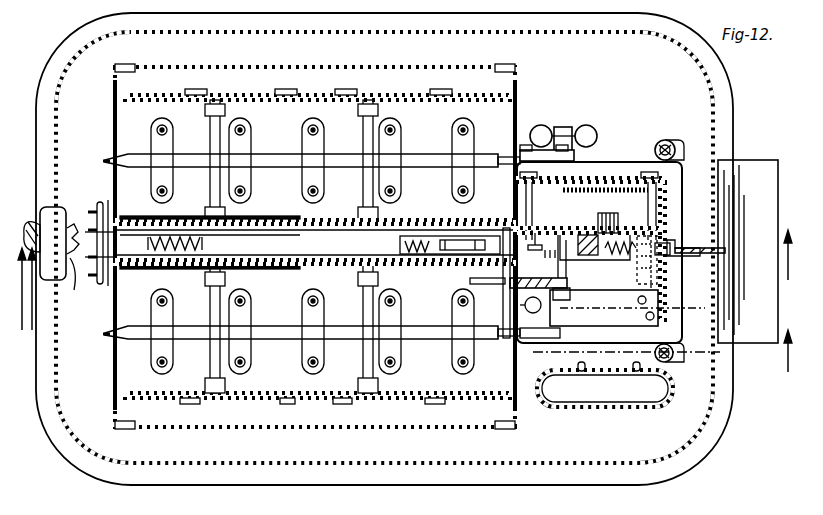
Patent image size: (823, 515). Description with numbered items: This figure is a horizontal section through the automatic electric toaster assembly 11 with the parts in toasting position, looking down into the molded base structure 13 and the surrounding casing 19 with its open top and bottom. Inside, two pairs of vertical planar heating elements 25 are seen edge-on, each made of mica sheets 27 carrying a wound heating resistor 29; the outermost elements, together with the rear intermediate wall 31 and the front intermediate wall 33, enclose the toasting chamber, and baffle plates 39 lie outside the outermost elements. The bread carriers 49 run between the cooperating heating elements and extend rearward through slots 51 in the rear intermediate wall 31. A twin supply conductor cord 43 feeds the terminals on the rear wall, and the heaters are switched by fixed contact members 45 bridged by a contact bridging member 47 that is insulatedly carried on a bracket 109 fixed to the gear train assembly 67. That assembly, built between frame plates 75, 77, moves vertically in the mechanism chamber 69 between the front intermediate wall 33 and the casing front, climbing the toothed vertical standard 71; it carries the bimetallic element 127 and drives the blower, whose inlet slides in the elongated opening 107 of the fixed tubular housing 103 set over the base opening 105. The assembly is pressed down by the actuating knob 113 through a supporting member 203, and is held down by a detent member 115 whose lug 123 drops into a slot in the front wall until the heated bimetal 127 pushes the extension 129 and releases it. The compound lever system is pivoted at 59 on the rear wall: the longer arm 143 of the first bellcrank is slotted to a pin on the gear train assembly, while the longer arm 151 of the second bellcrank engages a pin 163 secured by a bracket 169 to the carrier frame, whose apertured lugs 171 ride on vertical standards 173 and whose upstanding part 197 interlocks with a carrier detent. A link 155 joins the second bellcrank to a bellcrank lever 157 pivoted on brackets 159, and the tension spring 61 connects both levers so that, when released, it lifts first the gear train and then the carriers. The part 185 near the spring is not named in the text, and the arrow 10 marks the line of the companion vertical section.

The direction arrow 10 is at (401, 323).
The automatic electric toaster assembly 11 is at (410, 281).
The base structure 13 is at (96, 466).
The casing 19 is at (228, 34).
The heating elements 25 is at (256, 100).
The sheets of electric insulating material 27 is at (458, 98).
The heating resistor 29 is at (408, 108).
The rear intermediate wall 31 is at (113, 110).
The front intermediate wall 33 is at (518, 93).
The baffle plates 39 is at (295, 66).
The twin supply conductor cord 43 is at (53, 261).
The contact members 45 is at (538, 125).
The contact bridging member 47 is at (566, 125).
The bread carriers 49 is at (273, 160).
The slots 51 is at (110, 160).
The pivot 59 is at (100, 203).
The tension spring 61 is at (158, 244).
The gear train assembly 67 is at (623, 175).
The mechanism chamber 69 is at (688, 90).
The vertical standard 71 is at (584, 234).
The frame plate 75 is at (549, 185).
The frame plate 77 is at (587, 233).
The tubular housing 103 is at (618, 408).
The opening 105 is at (572, 405).
The elongated opening 107 is at (636, 371).
The bracket 109 is at (576, 156).
The actuating knob 113 is at (762, 168).
The detent member 115 is at (568, 283).
The lug 123 is at (503, 296).
The bimetallic element 127 is at (573, 320).
The extension 129 is at (572, 300).
The longer arm 143 is at (320, 226).
The longer arm 151 is at (316, 266).
The link 155 is at (260, 268).
The bellcrank lever 157 is at (472, 284).
The brackets 159 is at (474, 236).
The pin 163 is at (635, 270).
The bracket 169 is at (648, 278).
The apertured lugs 171 is at (683, 152).
The vertical standards 173 is at (670, 140).
The spring 185 is at (619, 243).
The upstanding part 197 is at (690, 255).
The member 203 is at (688, 247).